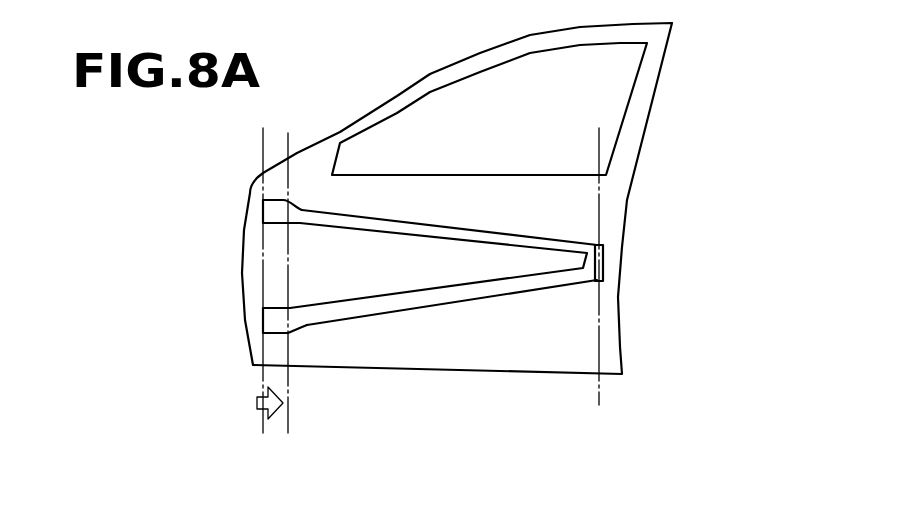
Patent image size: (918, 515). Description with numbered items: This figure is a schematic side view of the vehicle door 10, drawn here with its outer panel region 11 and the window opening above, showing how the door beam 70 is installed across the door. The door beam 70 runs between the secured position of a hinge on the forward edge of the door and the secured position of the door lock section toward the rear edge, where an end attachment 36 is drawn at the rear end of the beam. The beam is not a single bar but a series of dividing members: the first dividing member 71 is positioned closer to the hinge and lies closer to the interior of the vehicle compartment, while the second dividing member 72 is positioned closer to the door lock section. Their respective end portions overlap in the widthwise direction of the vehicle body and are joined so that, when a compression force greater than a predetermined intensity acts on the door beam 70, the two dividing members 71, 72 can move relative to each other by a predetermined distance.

The door 10 is at (702, 88).
The door outer panel 11 is at (618, 198).
The end bracket 36 is at (607, 266).
The door beam 70 is at (505, 308).
The first dividing member 71 is at (277, 213).
The second dividing member 72 is at (453, 265).